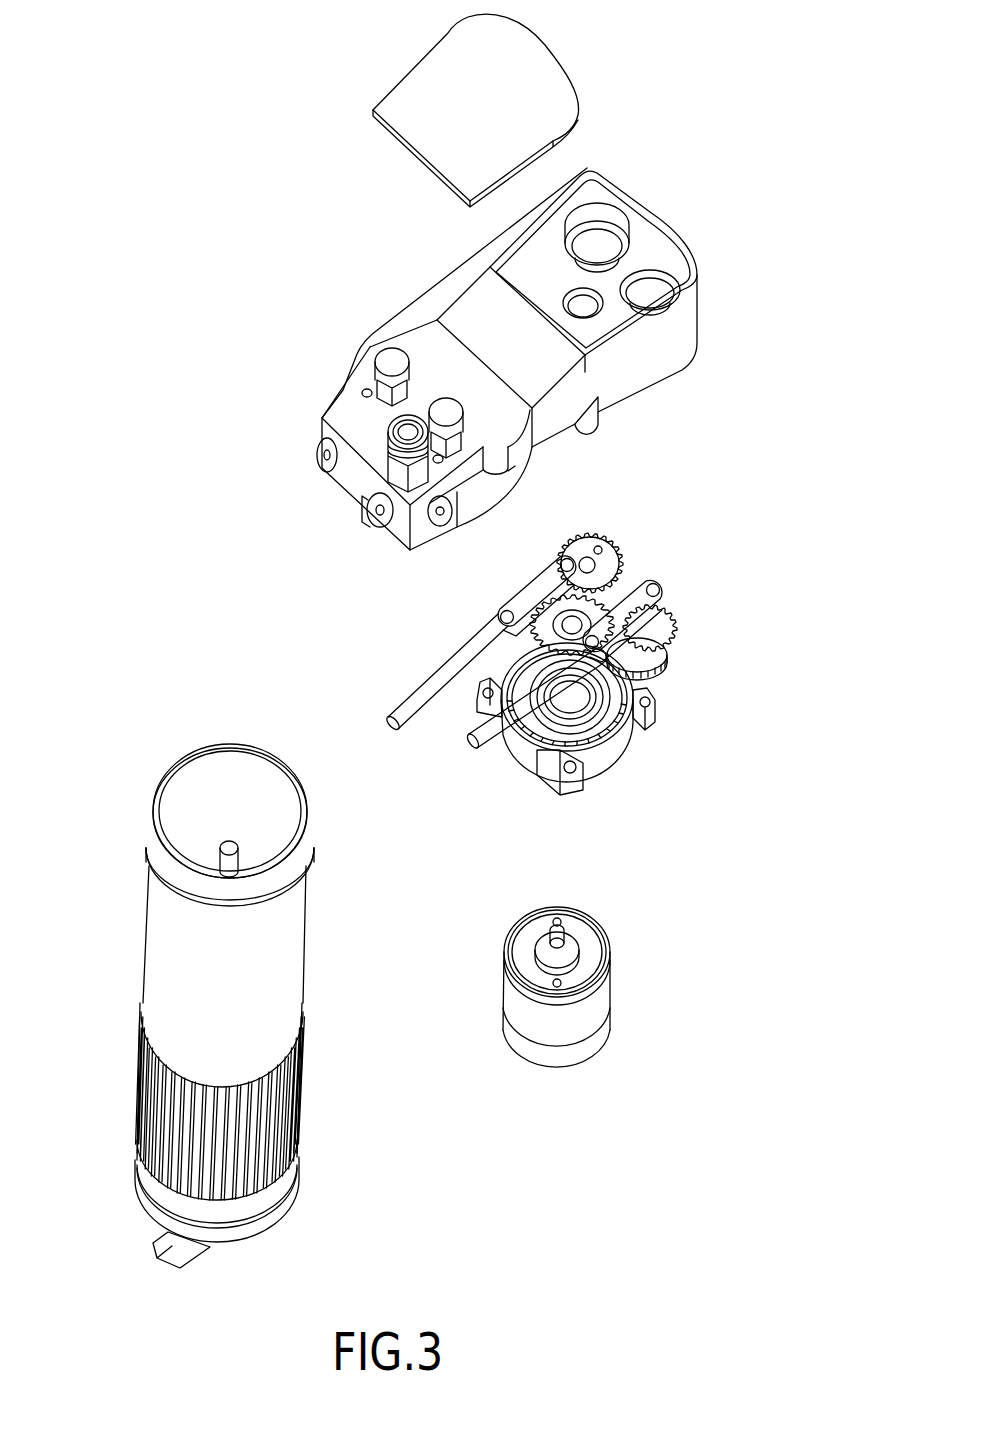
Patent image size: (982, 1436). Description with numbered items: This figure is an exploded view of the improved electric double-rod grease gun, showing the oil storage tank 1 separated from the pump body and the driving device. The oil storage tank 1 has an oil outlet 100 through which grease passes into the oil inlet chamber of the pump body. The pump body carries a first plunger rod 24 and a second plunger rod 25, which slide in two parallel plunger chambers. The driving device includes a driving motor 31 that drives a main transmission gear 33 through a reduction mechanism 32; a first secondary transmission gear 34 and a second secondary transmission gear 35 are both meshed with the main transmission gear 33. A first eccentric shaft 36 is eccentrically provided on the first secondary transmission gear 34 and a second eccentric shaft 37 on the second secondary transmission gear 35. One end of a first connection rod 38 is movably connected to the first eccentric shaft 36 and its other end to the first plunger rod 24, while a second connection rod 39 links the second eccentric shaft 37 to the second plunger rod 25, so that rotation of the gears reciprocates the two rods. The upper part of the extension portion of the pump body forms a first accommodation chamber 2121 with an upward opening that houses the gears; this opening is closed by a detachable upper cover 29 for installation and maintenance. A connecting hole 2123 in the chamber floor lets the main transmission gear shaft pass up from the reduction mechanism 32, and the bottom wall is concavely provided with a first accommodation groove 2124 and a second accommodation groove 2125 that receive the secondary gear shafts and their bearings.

The oil storage tank 1 is at (168, 947).
The oil outlet 100 is at (215, 768).
The first plunger rod 24 is at (480, 745).
The second plunger rod 25 is at (423, 690).
The upper cover 29 is at (420, 97).
The driving motor 31 is at (598, 1008).
The reduction mechanism 32 is at (612, 762).
The main transmission gear 33 is at (500, 605).
The first secondary transmission gear 34 is at (658, 625).
The second secondary transmission gear 35 is at (604, 562).
The first eccentric shaft 36 is at (653, 585).
The second eccentric shaft 37 is at (556, 558).
The first connection rod 38 is at (663, 647).
The second connection rod 39 is at (540, 590).
The first accommodation chamber 2121 is at (640, 253).
The connecting hole 2123 is at (577, 306).
The first accommodation groove 2124 is at (652, 288).
The second accommodation groove 2125 is at (602, 240).